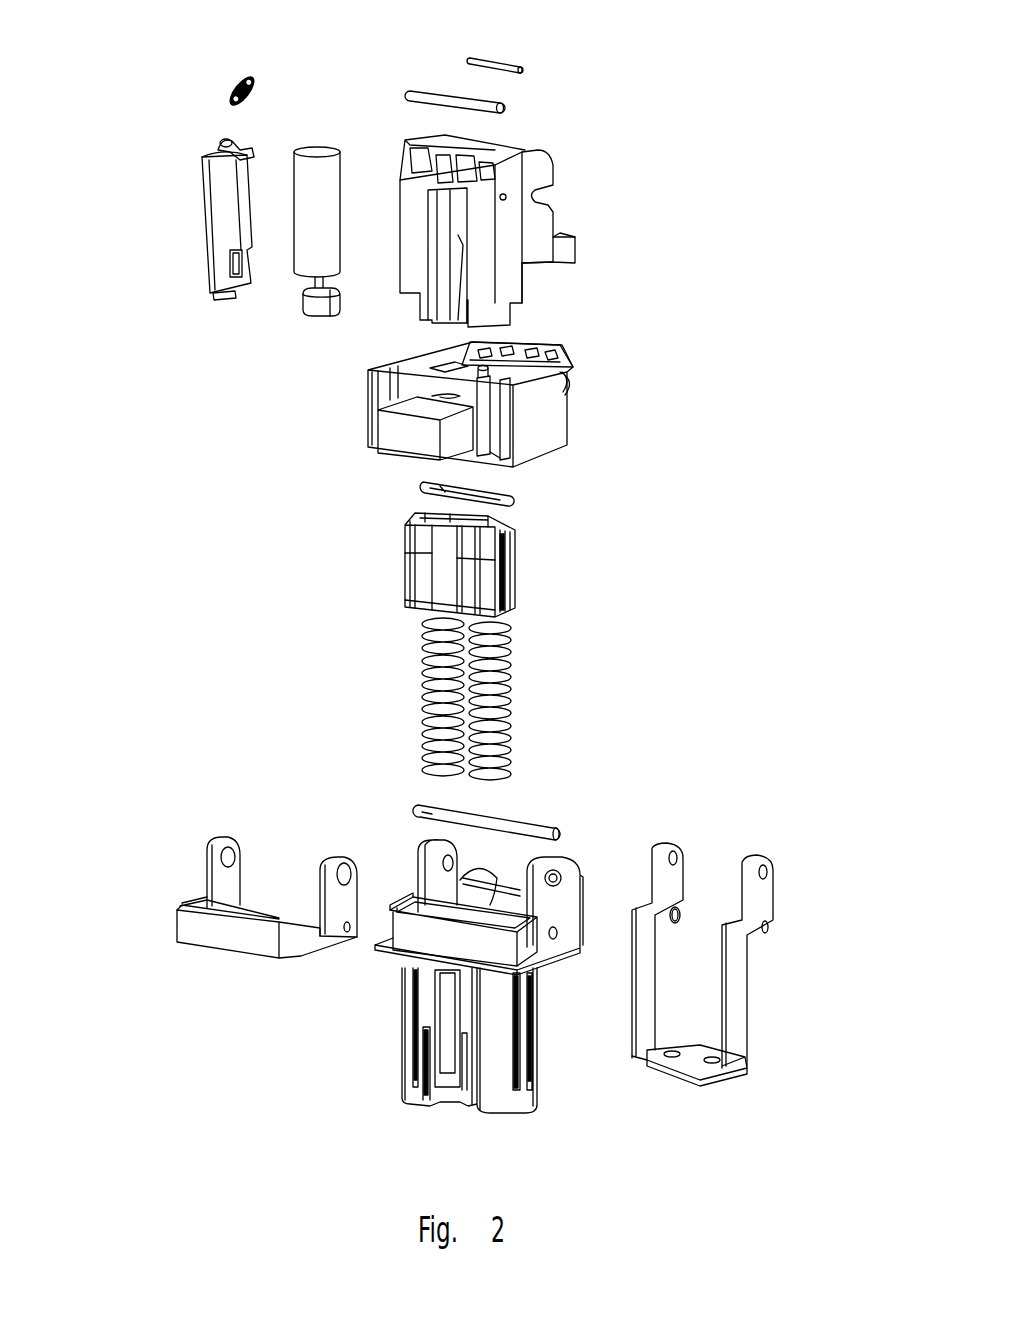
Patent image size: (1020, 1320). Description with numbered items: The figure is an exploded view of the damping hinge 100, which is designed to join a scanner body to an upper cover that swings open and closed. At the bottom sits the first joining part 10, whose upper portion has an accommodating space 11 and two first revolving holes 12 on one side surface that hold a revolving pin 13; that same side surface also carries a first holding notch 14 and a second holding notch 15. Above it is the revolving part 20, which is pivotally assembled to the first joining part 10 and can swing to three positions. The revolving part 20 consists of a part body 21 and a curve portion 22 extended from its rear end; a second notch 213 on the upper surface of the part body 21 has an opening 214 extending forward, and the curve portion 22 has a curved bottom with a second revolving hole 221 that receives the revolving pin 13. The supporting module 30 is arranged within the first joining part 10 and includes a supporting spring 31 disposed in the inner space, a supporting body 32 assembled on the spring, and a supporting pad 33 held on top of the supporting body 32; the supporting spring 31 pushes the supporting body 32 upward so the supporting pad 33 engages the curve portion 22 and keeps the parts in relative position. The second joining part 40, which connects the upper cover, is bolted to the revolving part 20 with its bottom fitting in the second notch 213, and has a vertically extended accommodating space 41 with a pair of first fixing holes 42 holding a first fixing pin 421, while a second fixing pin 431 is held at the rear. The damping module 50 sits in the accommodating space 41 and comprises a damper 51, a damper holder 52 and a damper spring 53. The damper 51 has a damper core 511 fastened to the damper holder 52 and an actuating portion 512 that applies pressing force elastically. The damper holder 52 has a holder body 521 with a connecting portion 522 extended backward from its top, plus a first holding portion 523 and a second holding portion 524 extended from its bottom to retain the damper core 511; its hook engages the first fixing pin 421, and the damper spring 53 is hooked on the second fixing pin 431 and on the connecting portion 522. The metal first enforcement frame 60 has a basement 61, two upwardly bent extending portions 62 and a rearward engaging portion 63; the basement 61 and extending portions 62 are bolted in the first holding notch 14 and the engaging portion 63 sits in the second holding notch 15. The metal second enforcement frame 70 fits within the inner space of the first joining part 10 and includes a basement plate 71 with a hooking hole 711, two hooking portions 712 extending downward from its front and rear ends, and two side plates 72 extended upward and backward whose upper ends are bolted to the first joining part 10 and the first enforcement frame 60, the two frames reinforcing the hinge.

The damping hinge 100 is at (73, 47).
The first joining part 10 is at (497, 1047).
The accommodating space 11 is at (450, 887).
The first revolving holes 12 is at (560, 872).
The revolving pin 13 is at (507, 822).
The first holding notch 14 is at (540, 917).
The second holding notch 15 is at (420, 900).
The revolving part 20 is at (537, 416).
The part body 21 is at (400, 430).
The curve portion 22 is at (567, 356).
The second revolving hole 221 is at (570, 382).
The second notch 213 is at (443, 378).
The opening 214 is at (440, 390).
The supporting module 30 is at (577, 670).
The supporting spring 31 is at (512, 650).
The supporting body 32 is at (483, 572).
The supporting pad 33 is at (473, 492).
The second joining part 40 is at (513, 235).
The accommodating space 41 is at (457, 226).
The first fixing holes 42 is at (507, 197).
The first fixing pin 421 is at (492, 103).
The second fixing pin 431 is at (513, 66).
The damping module 50 is at (152, 86).
The damper 51 is at (293, 155).
The damper core 511 is at (313, 192).
The actuating portion 512 is at (333, 302).
The damper holder 52 is at (217, 182).
The holder body 521 is at (232, 213).
The connecting portion 522 is at (250, 162).
The first holding portion 523 is at (250, 257).
The second holding portion 524 is at (227, 297).
The damper spring 53 is at (232, 89).
The first enforcement frame 60 is at (212, 970).
The basement 61 is at (257, 945).
The extending portions 62 is at (228, 885).
The engaging portion 63 is at (243, 912).
The second enforcement frame 70 is at (752, 1002).
The basement plate 71 is at (697, 1050).
The hooking hole 711 is at (682, 1050).
The hooking portions 712 is at (683, 1073).
The side plates 72 is at (647, 965).